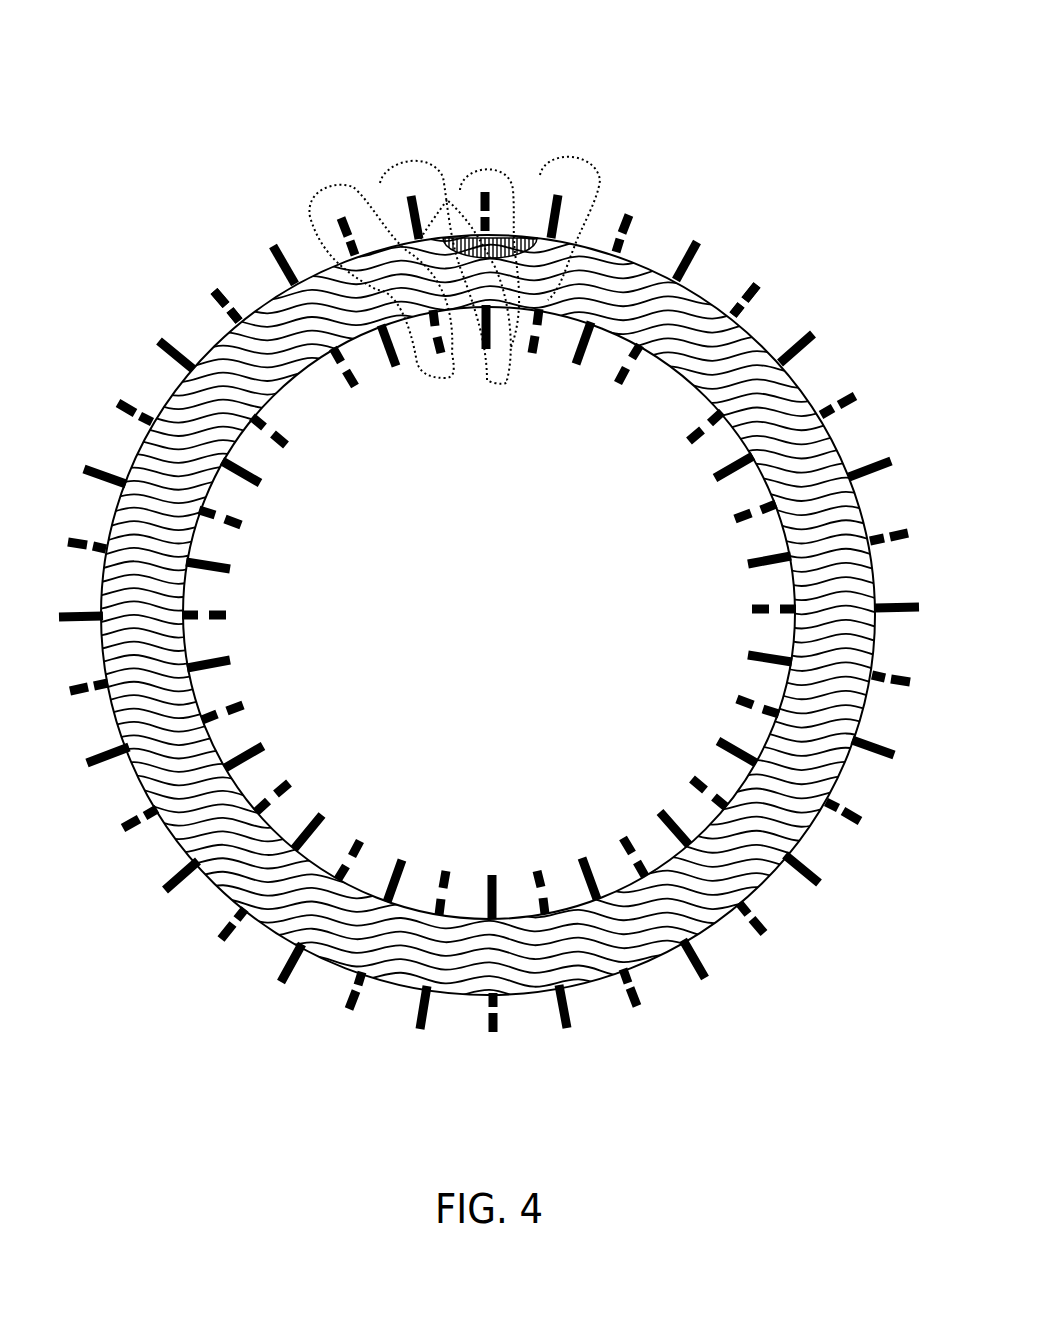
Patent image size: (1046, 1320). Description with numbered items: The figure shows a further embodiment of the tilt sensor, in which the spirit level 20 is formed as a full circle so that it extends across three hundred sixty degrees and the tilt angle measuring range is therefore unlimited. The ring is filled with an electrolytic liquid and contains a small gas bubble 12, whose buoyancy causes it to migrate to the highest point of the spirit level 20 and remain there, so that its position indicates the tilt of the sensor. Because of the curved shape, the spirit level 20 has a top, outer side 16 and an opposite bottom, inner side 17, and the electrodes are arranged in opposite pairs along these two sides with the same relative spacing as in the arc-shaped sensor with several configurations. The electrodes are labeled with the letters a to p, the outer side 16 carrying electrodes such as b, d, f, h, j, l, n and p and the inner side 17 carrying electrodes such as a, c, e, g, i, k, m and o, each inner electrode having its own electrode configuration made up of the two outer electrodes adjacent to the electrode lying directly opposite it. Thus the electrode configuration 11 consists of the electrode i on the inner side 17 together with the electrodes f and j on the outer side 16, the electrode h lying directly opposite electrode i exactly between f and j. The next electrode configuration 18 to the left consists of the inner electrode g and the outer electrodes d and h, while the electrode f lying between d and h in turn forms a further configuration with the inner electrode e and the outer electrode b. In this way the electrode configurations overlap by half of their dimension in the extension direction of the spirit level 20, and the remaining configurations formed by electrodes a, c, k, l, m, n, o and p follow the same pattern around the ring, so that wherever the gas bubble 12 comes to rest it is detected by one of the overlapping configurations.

The electrode configuration 11 is at (434, 180).
The gas bubble 12 is at (522, 232).
The outer side 16 is at (712, 297).
The inner side 17 is at (704, 398).
The electrode configuration 18 is at (330, 207).
The spirit level 20 is at (713, 126).
The electrode a is at (217, 297).
The electrode b is at (266, 245).
The electrode c is at (357, 388).
The electrode d is at (338, 210).
The electrode e is at (401, 368).
The electrode f is at (416, 196).
The electrode g is at (446, 356).
The electrode h is at (486, 190).
The electrode i is at (490, 354).
The electrode j is at (561, 193).
The electrode k is at (534, 356).
The electrode l is at (633, 212).
The electrode m is at (580, 365).
The electrode n is at (704, 243).
The electrode o is at (623, 382).
The electrode p is at (762, 283).